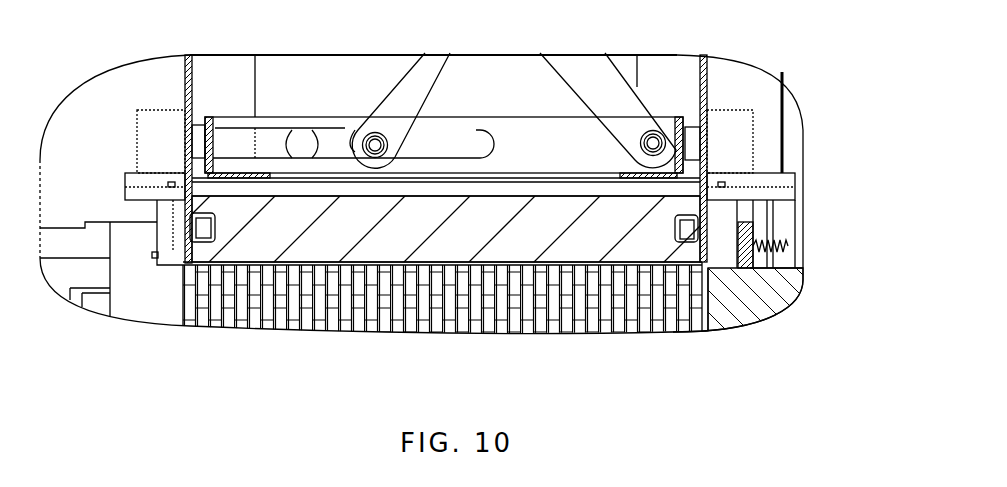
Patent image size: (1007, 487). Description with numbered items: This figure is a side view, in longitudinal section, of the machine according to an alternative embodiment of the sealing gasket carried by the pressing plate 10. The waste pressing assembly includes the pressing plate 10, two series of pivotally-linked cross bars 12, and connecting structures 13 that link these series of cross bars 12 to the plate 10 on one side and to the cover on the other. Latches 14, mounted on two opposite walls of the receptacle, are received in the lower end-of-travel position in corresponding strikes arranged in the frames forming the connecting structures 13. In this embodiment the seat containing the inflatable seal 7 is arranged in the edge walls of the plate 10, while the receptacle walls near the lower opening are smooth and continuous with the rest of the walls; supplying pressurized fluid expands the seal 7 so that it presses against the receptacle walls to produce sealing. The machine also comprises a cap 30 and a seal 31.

The latch 14 is at (198, 118).
The connecting structure 13 is at (318, 115).
The pivotally-linked cross bar 12 is at (474, 87).
The inflatable seal 7 is at (205, 243).
The pressing plate 10 is at (600, 252).
The seal 31 is at (738, 270).
The cap 30 is at (785, 282).